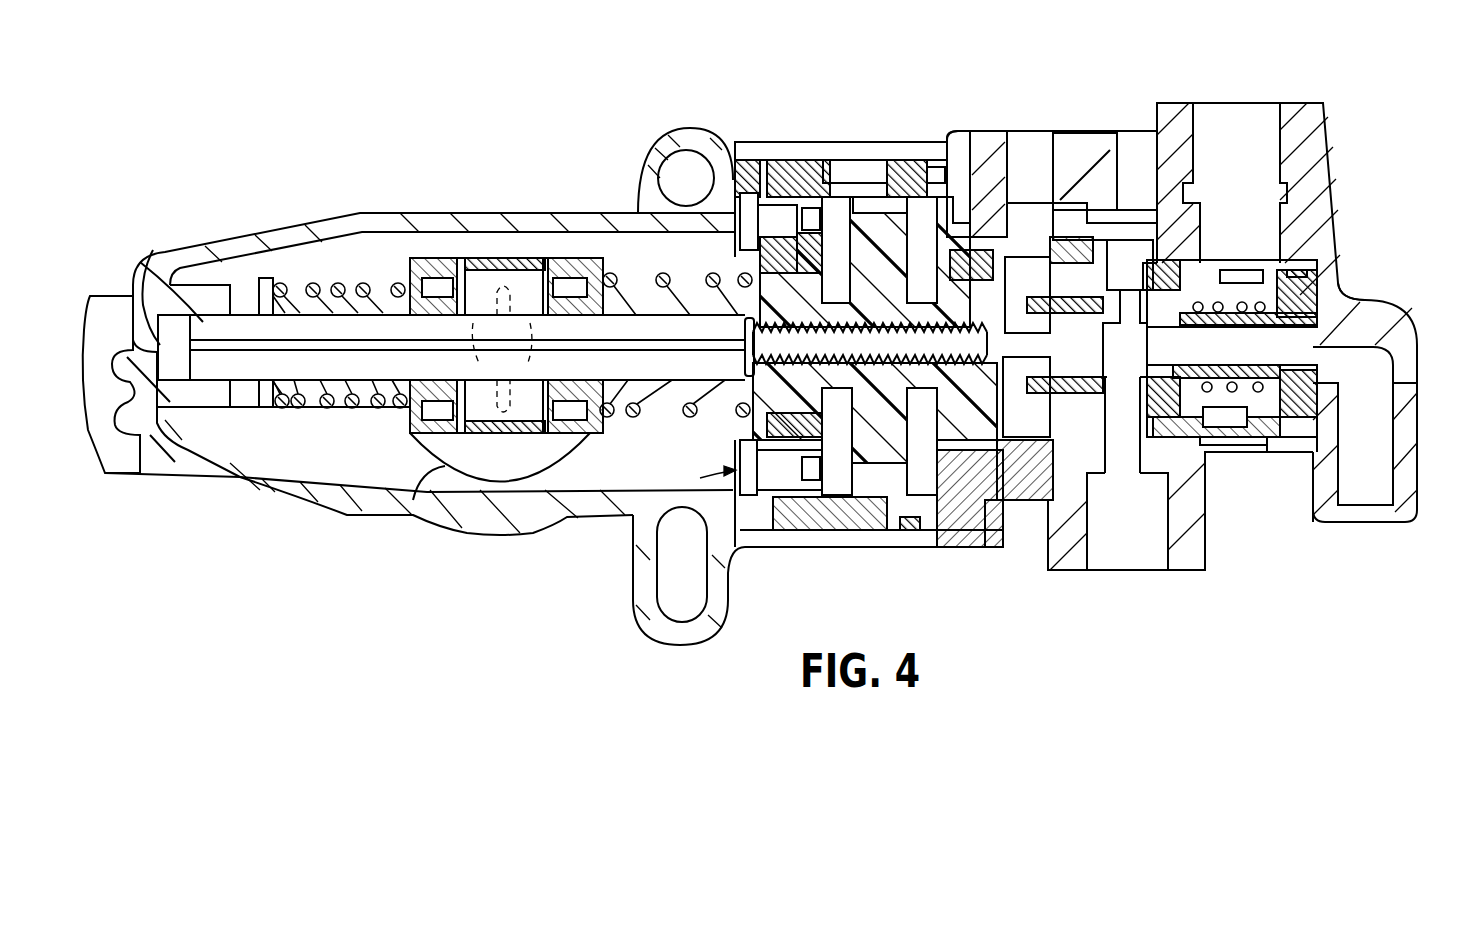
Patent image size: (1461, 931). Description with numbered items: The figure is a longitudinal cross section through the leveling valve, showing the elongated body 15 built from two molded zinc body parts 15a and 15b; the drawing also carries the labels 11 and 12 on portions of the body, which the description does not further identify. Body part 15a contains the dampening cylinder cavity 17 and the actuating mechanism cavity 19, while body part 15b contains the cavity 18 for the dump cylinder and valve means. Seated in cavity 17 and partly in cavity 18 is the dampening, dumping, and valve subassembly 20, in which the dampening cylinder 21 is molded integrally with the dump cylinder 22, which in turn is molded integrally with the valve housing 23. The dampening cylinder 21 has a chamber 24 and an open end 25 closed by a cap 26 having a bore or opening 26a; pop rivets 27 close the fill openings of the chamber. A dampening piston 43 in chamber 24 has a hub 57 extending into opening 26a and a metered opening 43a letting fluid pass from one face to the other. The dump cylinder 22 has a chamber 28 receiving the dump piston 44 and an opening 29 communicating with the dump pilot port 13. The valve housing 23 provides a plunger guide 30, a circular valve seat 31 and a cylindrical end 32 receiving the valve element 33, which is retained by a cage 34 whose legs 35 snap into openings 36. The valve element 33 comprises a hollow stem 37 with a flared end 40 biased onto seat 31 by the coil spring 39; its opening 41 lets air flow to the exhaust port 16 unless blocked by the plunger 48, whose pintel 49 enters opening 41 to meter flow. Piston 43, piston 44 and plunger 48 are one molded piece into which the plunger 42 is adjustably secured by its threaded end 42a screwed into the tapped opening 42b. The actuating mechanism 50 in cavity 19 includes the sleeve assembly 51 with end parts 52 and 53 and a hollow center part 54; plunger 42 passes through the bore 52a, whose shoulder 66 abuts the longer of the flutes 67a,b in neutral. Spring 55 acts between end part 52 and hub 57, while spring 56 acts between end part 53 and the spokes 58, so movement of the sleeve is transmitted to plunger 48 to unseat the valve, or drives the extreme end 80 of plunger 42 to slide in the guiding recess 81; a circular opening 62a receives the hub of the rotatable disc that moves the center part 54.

The housing body 11 is at (1277, 113).
The lower housing block 12 is at (1117, 553).
The dump pilot port 13 is at (1075, 145).
The elongated body 15 is at (862, 117).
The body part 15a is at (797, 150).
The body part 15b is at (990, 143).
The exhaust port 16 is at (1353, 512).
The dampening cylinder cavity 17 is at (880, 177).
The cavity 18 is at (1037, 468).
The actuating mechanism cavity 19 is at (423, 232).
The dampening, dumping, and valve subassembly 20 is at (893, 487).
The dampening cylinder 21 is at (893, 172).
The dump cylinder 22 is at (960, 145).
The valve housing 23 is at (1105, 250).
The chamber 24 is at (907, 187).
The open end 25 is at (750, 200).
The cap 26 is at (633, 507).
The bore or opening 26a is at (702, 464).
The pop rivets 27 is at (773, 205).
The chamber 28 is at (1010, 275).
The opening 29 is at (1100, 262).
The plunger guide 30 is at (1084, 500).
The circular valve seat 31 is at (1175, 372).
The cylindrical end 32 is at (1285, 265).
The valve element 33 is at (1355, 340).
The cage 34 is at (1300, 277).
The legs 35 is at (1233, 270).
The openings 36 is at (1248, 440).
The hollow stem 37 is at (1335, 358).
The coil spring 39 is at (1240, 392).
The flared end 40 is at (1198, 268).
The opening 41 is at (1217, 350).
The plunger 42 is at (335, 325).
The threaded end 42a is at (888, 354).
The tapped opening 42b is at (1053, 347).
The dampening piston 43 is at (932, 473).
The metered opening 43a is at (858, 478).
The dump piston 44 is at (931, 514).
The plunger 48 is at (1140, 375).
The pintel 49 is at (1165, 355).
The actuating mechanism 50 is at (523, 250).
The sleeve assembly 51 is at (553, 250).
The end part 52 is at (568, 257).
The bore 52a is at (652, 398).
The end part 53 is at (410, 262).
The center part 54 is at (533, 480).
The spring 55 is at (652, 180).
The spring 56 is at (325, 470).
The hub 57 is at (736, 427).
The spokes 58 is at (263, 277).
The circular opening 62a is at (430, 480).
The shoulder 66 is at (630, 275).
The flutes 67a,b is at (378, 362).
The extreme end 80 is at (152, 276).
The recess 81 is at (148, 322).